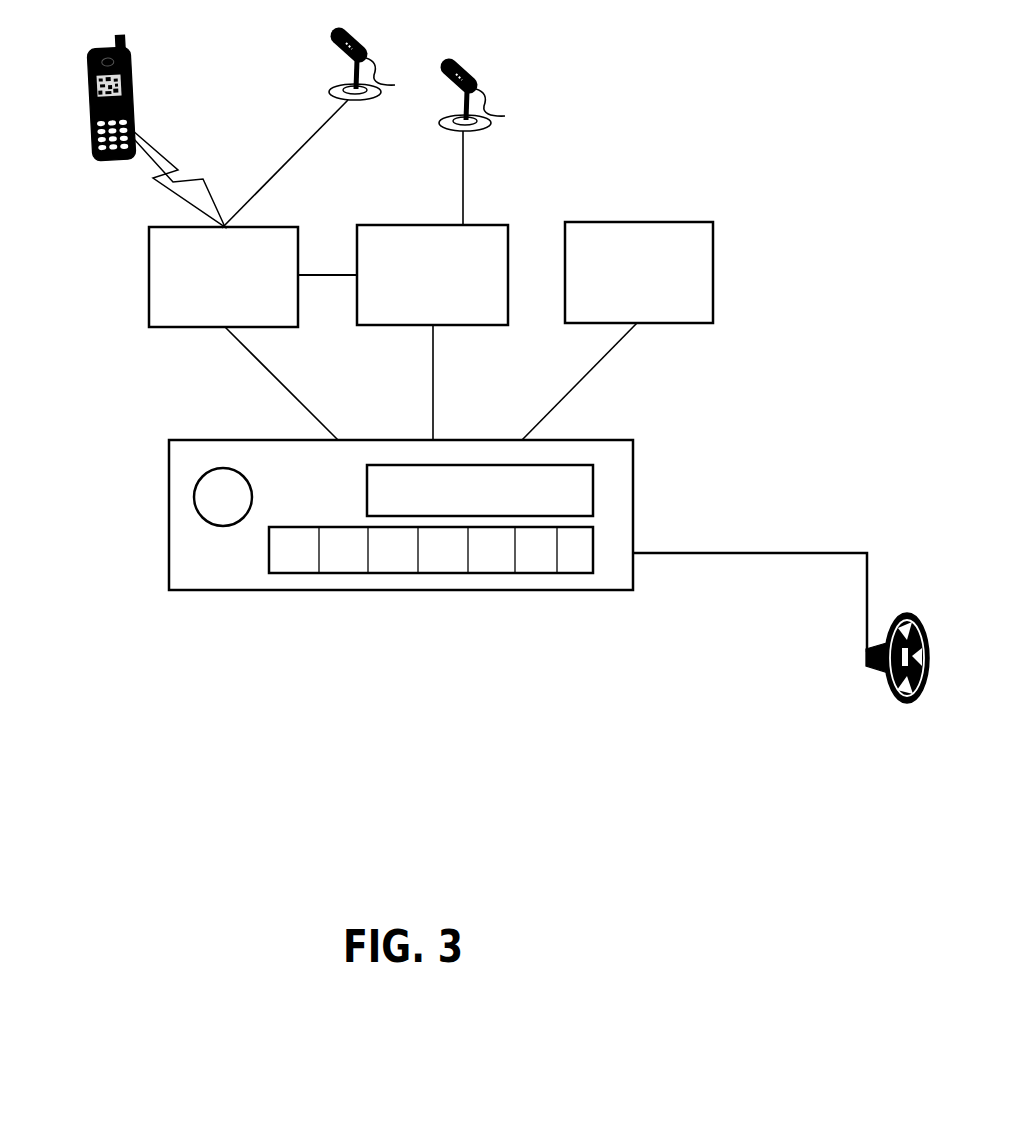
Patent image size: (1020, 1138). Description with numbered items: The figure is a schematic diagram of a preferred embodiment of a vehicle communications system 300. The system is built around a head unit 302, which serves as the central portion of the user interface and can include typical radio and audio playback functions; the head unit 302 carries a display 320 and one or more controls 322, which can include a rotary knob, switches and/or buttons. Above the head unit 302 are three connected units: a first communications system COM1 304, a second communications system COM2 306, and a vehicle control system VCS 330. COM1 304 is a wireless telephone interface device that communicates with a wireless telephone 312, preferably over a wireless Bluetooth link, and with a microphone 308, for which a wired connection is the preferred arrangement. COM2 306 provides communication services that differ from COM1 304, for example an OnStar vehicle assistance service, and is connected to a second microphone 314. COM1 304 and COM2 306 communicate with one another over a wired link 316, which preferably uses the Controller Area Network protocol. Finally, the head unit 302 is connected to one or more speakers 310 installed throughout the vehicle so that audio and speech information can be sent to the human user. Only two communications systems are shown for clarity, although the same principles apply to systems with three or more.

The vehicle communications system 300 is at (781, 58).
The head unit 302 is at (169, 490).
The first communications system (COM1) 304 is at (149, 278).
The second communications system (COM2) 306 is at (399, 225).
The microphone 308 is at (365, 55).
The speaker 310 is at (888, 688).
The wireless telephone 312 is at (94, 53).
The second microphone 314 is at (477, 73).
The wired link 316 is at (334, 275).
The display 320 is at (367, 490).
The controls 322 is at (226, 478).
The vehicle control system (VCS) 330 is at (639, 222).